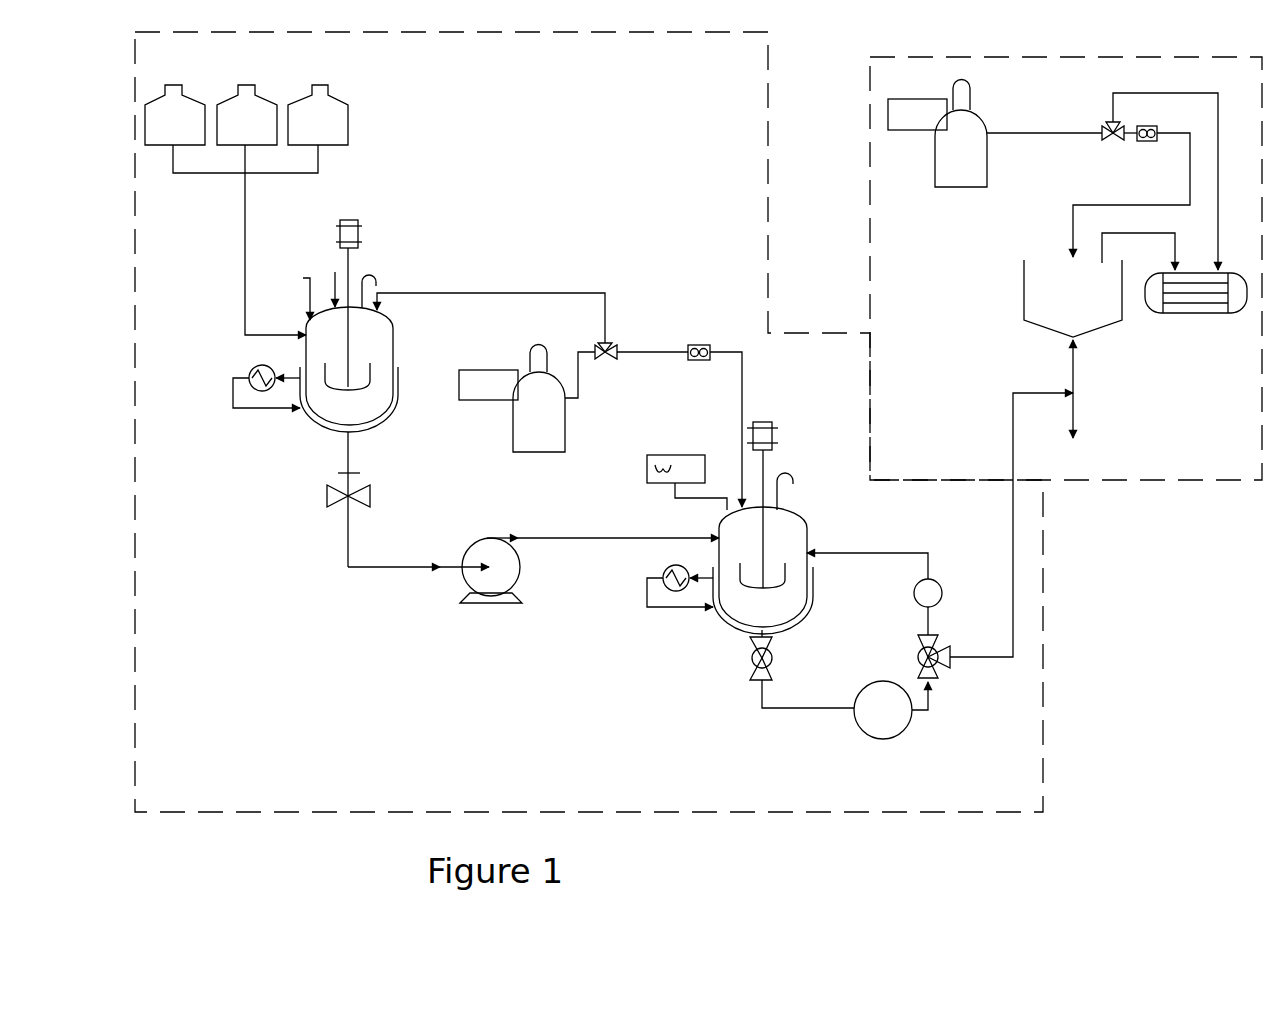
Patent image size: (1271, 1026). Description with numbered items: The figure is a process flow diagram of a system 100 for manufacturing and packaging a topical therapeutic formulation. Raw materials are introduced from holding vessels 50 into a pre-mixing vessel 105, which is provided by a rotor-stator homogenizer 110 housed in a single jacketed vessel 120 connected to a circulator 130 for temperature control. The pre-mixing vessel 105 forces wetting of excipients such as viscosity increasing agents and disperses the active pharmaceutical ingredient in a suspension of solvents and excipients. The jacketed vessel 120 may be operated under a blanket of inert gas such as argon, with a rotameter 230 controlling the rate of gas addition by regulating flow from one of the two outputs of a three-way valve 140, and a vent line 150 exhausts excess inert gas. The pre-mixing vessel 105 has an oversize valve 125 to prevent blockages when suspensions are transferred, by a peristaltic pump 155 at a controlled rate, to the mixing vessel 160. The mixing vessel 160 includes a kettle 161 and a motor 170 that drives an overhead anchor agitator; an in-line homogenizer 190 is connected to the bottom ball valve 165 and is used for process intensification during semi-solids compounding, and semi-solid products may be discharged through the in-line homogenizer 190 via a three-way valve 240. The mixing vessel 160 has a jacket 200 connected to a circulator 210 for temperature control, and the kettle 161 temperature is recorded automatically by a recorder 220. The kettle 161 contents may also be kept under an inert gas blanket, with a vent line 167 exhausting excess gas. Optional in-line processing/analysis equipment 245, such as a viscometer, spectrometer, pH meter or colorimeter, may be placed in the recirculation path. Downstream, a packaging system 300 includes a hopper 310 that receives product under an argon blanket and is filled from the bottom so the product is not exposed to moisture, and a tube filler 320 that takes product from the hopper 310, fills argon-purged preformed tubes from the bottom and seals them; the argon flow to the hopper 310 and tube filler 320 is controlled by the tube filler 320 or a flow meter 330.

The holding vessels 50 is at (388, 117).
The system 100 is at (780, 813).
The pre-mixing vessel 105 is at (445, 255).
The rotor-stator homogenizer 110 is at (393, 338).
The jacketed vessel 120 is at (373, 422).
The oversize valve 125 is at (372, 500).
The circulator 130 is at (273, 412).
The argon supply valve 140 is at (615, 342).
The vent line 150 is at (372, 273).
The peristaltic pump 155 is at (467, 557).
The mixing vessel 160 is at (668, 685).
The kettle 161 is at (797, 518).
The bottom ball valve 165 is at (752, 682).
The vent line 167 is at (790, 469).
The motor 170 is at (758, 420).
The in-line homogenizer 190 is at (870, 718).
The jacket 200 is at (797, 618).
The circulator 210 is at (683, 608).
The recorder 220 is at (647, 468).
The rotameter 230 is at (693, 362).
The three-way valve 240 is at (937, 673).
The in-line processing/analysis equipment 245 is at (942, 580).
The packaging system 300 is at (1170, 480).
The hopper 310 is at (1062, 312).
The tube filler 320 is at (1172, 318).
The flow meter 330 is at (1143, 143).